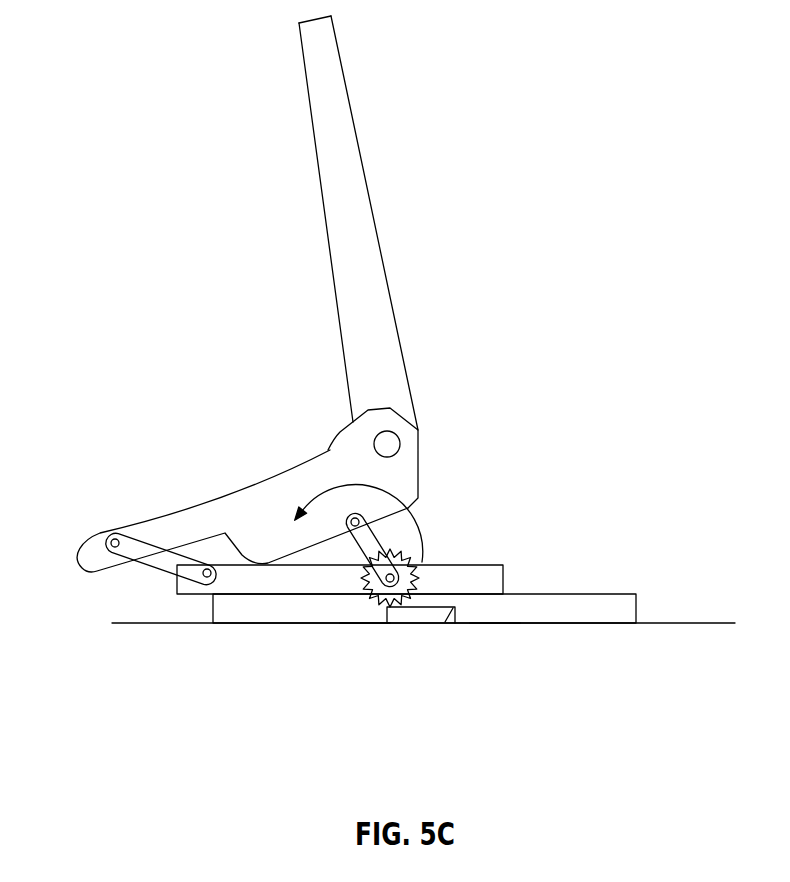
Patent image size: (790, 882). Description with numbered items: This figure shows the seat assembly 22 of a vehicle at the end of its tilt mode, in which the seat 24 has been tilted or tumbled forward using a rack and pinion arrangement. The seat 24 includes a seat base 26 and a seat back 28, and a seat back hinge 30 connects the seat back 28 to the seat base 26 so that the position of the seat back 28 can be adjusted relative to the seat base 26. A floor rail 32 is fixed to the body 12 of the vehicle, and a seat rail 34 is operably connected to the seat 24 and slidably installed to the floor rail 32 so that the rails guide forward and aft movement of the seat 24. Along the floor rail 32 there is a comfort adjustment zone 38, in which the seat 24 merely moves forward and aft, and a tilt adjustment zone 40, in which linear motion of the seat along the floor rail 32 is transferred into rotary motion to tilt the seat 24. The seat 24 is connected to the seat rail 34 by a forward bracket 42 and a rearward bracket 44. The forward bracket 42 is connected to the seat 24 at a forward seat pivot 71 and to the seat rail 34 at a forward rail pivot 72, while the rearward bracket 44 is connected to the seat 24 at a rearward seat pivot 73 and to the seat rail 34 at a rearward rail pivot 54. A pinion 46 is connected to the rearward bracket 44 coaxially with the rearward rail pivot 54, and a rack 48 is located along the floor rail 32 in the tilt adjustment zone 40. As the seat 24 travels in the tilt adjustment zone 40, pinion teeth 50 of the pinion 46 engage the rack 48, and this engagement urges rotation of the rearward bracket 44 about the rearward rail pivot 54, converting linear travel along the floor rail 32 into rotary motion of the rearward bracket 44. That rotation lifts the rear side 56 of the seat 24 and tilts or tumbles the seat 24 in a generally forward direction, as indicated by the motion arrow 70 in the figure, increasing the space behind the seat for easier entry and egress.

The body 12 is at (122, 620).
The seat assembly 22 is at (193, 230).
The seat 24 is at (316, 160).
The seat base 26 is at (236, 494).
The seat back 28 is at (357, 118).
The seat back hinge 30 is at (402, 443).
The floor rail 32 is at (565, 617).
The seat rail 34 is at (503, 578).
The comfort adjustment zone 38 is at (493, 646).
The tilt adjustment zone 40 is at (363, 633).
The forward bracket 42 is at (131, 537).
The rearward bracket 44 is at (355, 540).
The pinion 46 is at (342, 518).
The rack 48 is at (400, 617).
The pinion teeth 50 is at (398, 603).
The rearward rail pivot 54 is at (403, 557).
The rear side 56 is at (422, 470).
The recline mechanism 70 is at (305, 725).
The forward seat pivot 71 is at (105, 540).
The forward rail pivot 72 is at (185, 583).
The rearward seat pivot 73 is at (350, 515).